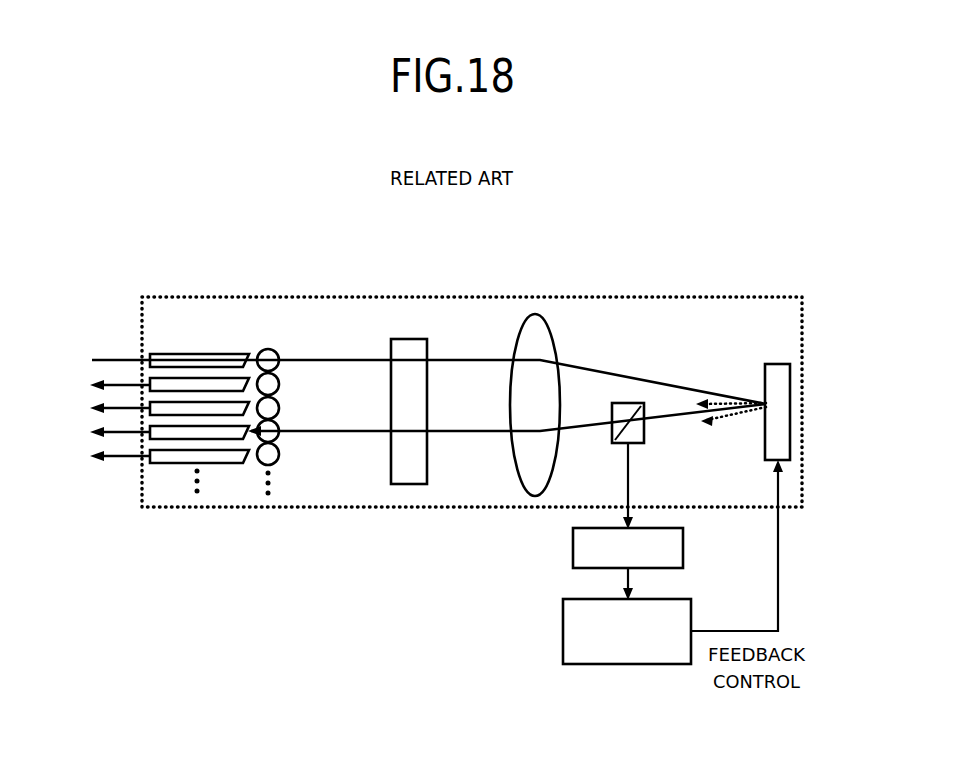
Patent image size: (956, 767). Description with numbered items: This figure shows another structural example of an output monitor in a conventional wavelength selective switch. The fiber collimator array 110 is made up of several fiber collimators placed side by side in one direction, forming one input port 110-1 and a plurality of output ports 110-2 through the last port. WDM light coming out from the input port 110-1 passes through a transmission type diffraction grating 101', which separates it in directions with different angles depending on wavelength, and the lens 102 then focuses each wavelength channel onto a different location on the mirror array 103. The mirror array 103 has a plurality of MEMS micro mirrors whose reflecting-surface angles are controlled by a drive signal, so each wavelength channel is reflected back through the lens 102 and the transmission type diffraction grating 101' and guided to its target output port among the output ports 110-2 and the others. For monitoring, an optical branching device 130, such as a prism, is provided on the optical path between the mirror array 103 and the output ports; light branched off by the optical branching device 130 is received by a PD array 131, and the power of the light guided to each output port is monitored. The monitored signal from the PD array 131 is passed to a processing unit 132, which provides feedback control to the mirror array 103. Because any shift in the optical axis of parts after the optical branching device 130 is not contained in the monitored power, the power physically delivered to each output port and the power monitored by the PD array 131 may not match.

The fiber collimator array 110 is at (205, 393).
The input port 110-1 is at (186, 353).
The output port 110-2 is at (185, 375).
The transmission type diffraction grating 101' is at (387, 369).
The lens 102 is at (533, 318).
The mirror array 103 is at (775, 364).
The optical branching device 130 is at (645, 432).
The PD array 131 is at (573, 550).
The processing unit 132 is at (561, 632).